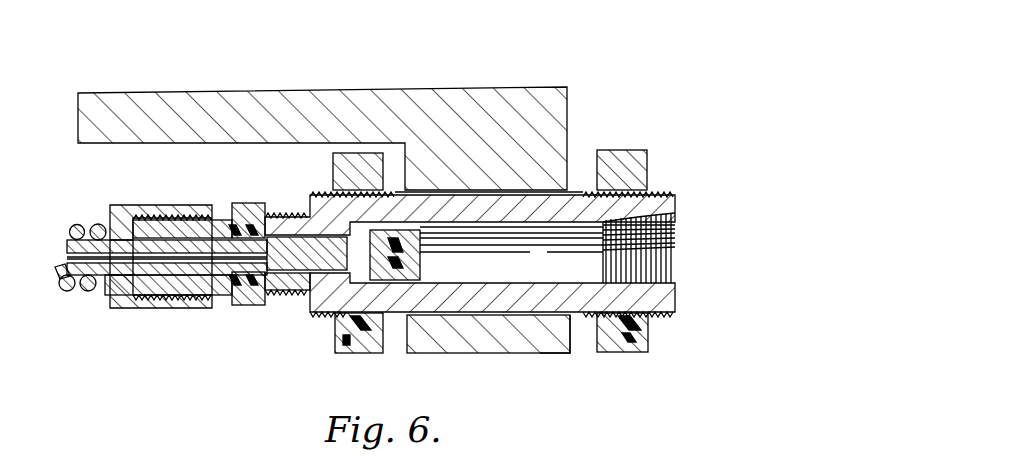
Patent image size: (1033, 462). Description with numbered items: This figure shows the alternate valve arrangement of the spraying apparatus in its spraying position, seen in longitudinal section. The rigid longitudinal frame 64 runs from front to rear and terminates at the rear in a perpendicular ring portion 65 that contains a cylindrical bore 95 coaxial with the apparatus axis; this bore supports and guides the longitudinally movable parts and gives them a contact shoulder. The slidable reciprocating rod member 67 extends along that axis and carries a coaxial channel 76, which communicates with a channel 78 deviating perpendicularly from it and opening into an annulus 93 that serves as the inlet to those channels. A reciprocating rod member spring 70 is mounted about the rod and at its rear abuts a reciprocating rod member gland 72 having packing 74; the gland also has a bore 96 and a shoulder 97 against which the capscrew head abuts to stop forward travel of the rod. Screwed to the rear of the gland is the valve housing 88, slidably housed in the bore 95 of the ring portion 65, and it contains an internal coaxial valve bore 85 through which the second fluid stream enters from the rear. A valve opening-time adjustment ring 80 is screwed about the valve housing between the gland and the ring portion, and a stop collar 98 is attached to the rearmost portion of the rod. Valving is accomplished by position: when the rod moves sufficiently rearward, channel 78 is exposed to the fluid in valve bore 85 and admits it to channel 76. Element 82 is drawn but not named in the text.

The rigid longitudinal frame 64 is at (277, 97).
The ring portion 65 is at (558, 318).
The reciprocating rod member 67 is at (75, 245).
The reciprocating rod member spring 70 is at (64, 288).
The reciprocating rod member gland 72 is at (126, 324).
The packing 74 is at (232, 288).
The coaxial channel 76 is at (107, 261).
The channel 78 is at (262, 283).
The valve opening-time adjustment ring 80 is at (335, 163).
The retaining nut 82 is at (618, 158).
The valve bore 85 is at (550, 268).
The valve housing 88 is at (663, 191).
The annulus 93 is at (283, 277).
The cylindrical bore 95 is at (482, 317).
The bore 96 is at (302, 277).
The shoulder 97 is at (350, 312).
The stop collar 98 is at (421, 273).